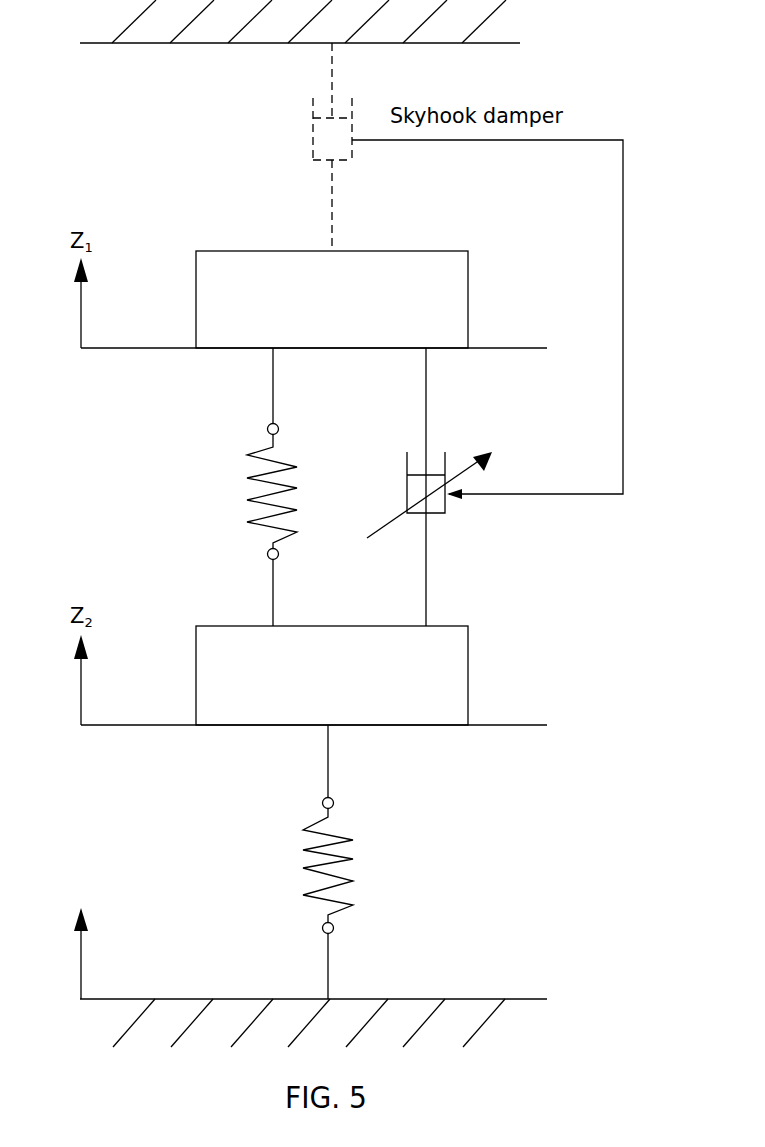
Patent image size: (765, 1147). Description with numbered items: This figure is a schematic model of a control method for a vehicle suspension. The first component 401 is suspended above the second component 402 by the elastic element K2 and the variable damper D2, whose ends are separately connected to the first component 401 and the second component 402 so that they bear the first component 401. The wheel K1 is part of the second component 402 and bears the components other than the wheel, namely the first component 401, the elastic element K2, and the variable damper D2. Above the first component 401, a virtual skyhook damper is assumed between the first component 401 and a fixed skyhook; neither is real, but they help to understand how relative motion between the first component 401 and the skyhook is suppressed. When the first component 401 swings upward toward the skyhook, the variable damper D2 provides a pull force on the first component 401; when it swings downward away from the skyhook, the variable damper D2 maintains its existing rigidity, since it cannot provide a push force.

The first component 401 is at (332, 299).
The second component 402 is at (332, 675).
The wheel K1 is at (355, 862).
The elastic element K2 is at (242, 487).
The variable damper D2 is at (427, 487).